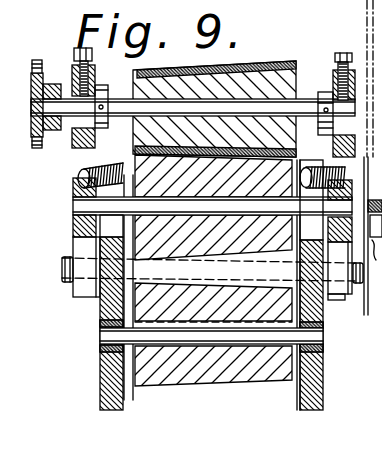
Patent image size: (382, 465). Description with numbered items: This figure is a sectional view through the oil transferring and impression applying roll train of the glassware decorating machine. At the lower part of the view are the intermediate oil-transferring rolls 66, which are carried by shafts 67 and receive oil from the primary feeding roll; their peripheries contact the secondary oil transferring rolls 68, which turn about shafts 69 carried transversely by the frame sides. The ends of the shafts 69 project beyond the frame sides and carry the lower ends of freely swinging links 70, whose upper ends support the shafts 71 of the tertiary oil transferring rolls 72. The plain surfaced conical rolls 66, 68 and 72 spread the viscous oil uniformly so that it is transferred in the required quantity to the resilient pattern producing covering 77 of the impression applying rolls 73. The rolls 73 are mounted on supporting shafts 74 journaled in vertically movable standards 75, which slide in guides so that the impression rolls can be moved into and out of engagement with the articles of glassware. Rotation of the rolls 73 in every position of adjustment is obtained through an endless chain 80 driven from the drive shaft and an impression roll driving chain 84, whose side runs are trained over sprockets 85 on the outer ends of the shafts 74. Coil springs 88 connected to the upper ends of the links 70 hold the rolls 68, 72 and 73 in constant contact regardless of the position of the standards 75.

The intermediate oil-transferring rolls 66 is at (232, 378).
The shafts 67 is at (103, 336).
The secondary oil transferring rolls 68 is at (203, 281).
The shafts 69 is at (62, 271).
The freely swinging links 70 is at (74, 227).
The shafts 71 is at (77, 202).
The tertiary oil transferring rolls 72 is at (93, 244).
The impression applying rolls 73 is at (278, 63).
The supporting shafts 74 is at (304, 100).
The vertically movable standards 75 is at (93, 147).
The resilient pattern producing covering 77 is at (247, 62).
The endless chain 80 is at (356, 157).
The impression roll driving chain 84 is at (38, 150).
The sprockets 85 is at (33, 76).
The coil springs 88 is at (100, 168).